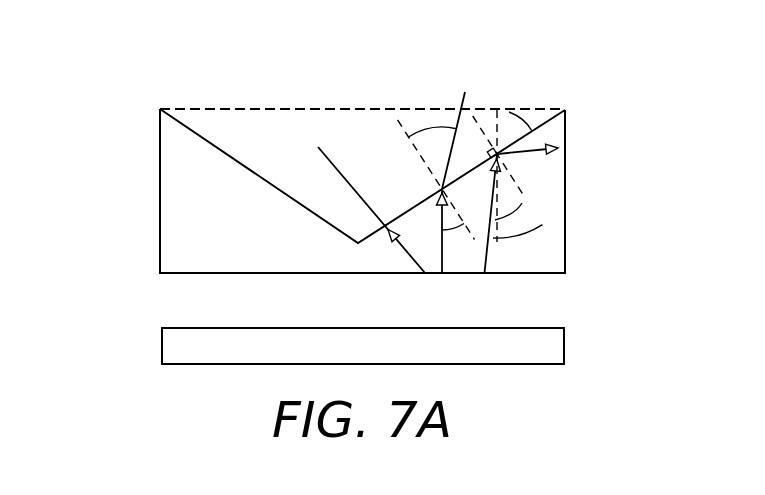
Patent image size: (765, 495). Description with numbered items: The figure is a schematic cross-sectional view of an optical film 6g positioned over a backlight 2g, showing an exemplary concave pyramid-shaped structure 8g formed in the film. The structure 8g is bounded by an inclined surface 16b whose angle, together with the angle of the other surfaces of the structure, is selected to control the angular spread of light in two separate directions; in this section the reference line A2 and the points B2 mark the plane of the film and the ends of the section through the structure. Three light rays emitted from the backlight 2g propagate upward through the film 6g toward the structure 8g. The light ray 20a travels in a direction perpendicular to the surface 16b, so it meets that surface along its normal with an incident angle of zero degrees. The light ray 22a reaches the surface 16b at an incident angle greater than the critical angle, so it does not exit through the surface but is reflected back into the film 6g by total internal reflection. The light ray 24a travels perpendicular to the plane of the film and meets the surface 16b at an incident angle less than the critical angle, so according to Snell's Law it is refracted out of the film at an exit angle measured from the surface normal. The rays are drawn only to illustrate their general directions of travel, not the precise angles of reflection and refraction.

The concave pyramid-shaped structure 8g is at (181, 68).
The optical film 6g is at (555, 248).
The surface 16b is at (213, 145).
The light ray 20a is at (408, 256).
The light ray 22a is at (492, 262).
The light ray 24a is at (443, 267).
The backlight 2g is at (162, 343).
The top surface plane A2 is at (362, 95).
The reference points B2 is at (360, 124).